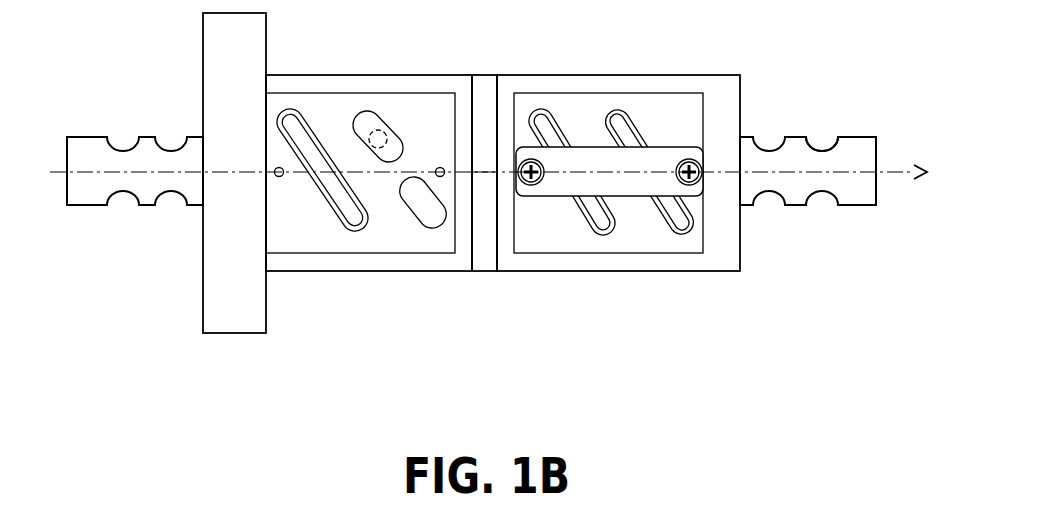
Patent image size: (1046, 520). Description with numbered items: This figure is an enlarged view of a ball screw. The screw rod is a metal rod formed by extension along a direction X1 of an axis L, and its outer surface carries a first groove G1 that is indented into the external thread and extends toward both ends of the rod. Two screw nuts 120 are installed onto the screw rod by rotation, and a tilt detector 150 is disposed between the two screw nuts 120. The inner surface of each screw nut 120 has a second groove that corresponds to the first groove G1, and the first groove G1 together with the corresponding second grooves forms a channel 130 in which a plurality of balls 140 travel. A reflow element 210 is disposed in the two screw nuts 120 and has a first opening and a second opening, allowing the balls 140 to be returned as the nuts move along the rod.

The screw nut 120 is at (323, 263).
The channel 130 is at (422, 205).
The ball 140 is at (378, 137).
The tilt detector 150 is at (484, 90).
The reflow element 210 is at (295, 130).
The first groove G1 is at (821, 150).
The axis L is at (897, 170).
The direction X1 is at (937, 172).